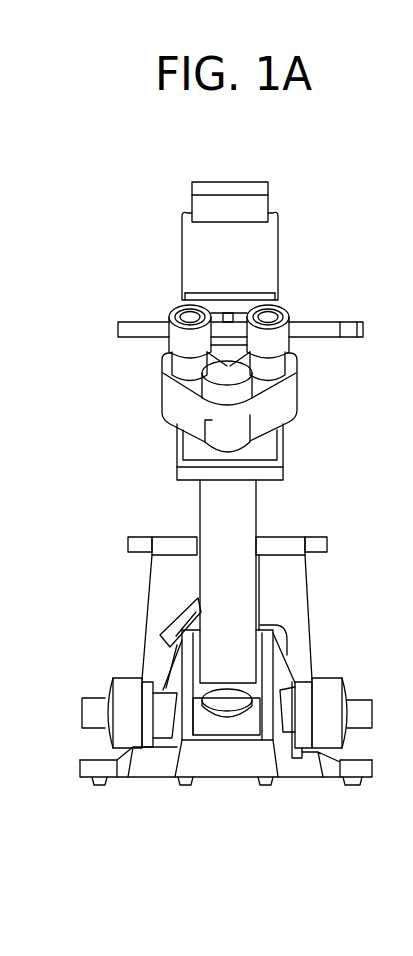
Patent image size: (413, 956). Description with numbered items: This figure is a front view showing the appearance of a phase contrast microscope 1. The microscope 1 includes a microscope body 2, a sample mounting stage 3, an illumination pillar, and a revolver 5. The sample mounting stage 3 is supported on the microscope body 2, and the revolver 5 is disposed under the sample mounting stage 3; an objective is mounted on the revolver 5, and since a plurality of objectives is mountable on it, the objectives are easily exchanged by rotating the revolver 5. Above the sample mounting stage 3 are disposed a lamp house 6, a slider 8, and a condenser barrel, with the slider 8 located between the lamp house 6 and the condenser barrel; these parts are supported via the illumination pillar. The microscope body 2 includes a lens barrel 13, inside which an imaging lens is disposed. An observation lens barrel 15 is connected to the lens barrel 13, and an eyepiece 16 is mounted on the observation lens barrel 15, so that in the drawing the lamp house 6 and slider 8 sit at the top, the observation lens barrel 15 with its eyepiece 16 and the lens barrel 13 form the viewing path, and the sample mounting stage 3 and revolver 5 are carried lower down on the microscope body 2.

The microscope 1 is at (316, 169).
The microscope body 2 is at (287, 601).
The sample mounting stage 3 is at (175, 547).
The revolver 5 is at (177, 615).
The lamp house 6 is at (200, 253).
The slider 8 is at (315, 328).
The lens barrel 13 is at (245, 503).
The observation lens barrel 15 is at (170, 395).
The eyepiece 16 is at (187, 345).